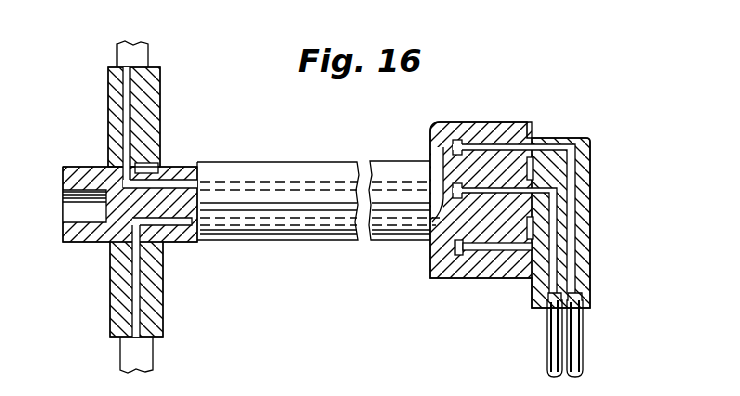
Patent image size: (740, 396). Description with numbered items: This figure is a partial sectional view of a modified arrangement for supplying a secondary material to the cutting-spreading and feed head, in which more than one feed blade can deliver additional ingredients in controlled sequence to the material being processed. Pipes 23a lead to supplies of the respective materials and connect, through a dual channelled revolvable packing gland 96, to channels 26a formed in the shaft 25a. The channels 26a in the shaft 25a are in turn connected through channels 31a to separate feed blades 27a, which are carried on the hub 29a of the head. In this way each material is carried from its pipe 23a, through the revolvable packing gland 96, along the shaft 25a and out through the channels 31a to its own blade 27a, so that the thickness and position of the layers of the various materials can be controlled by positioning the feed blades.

The feed blade 27a is at (148, 55).
The channel 31a is at (127, 102).
The hub 29a is at (108, 140).
The channel 26a is at (172, 182).
The shaft 25a is at (297, 147).
The dual channelled revolvable packing gland 96 is at (510, 122).
The pipe 23a is at (549, 346).